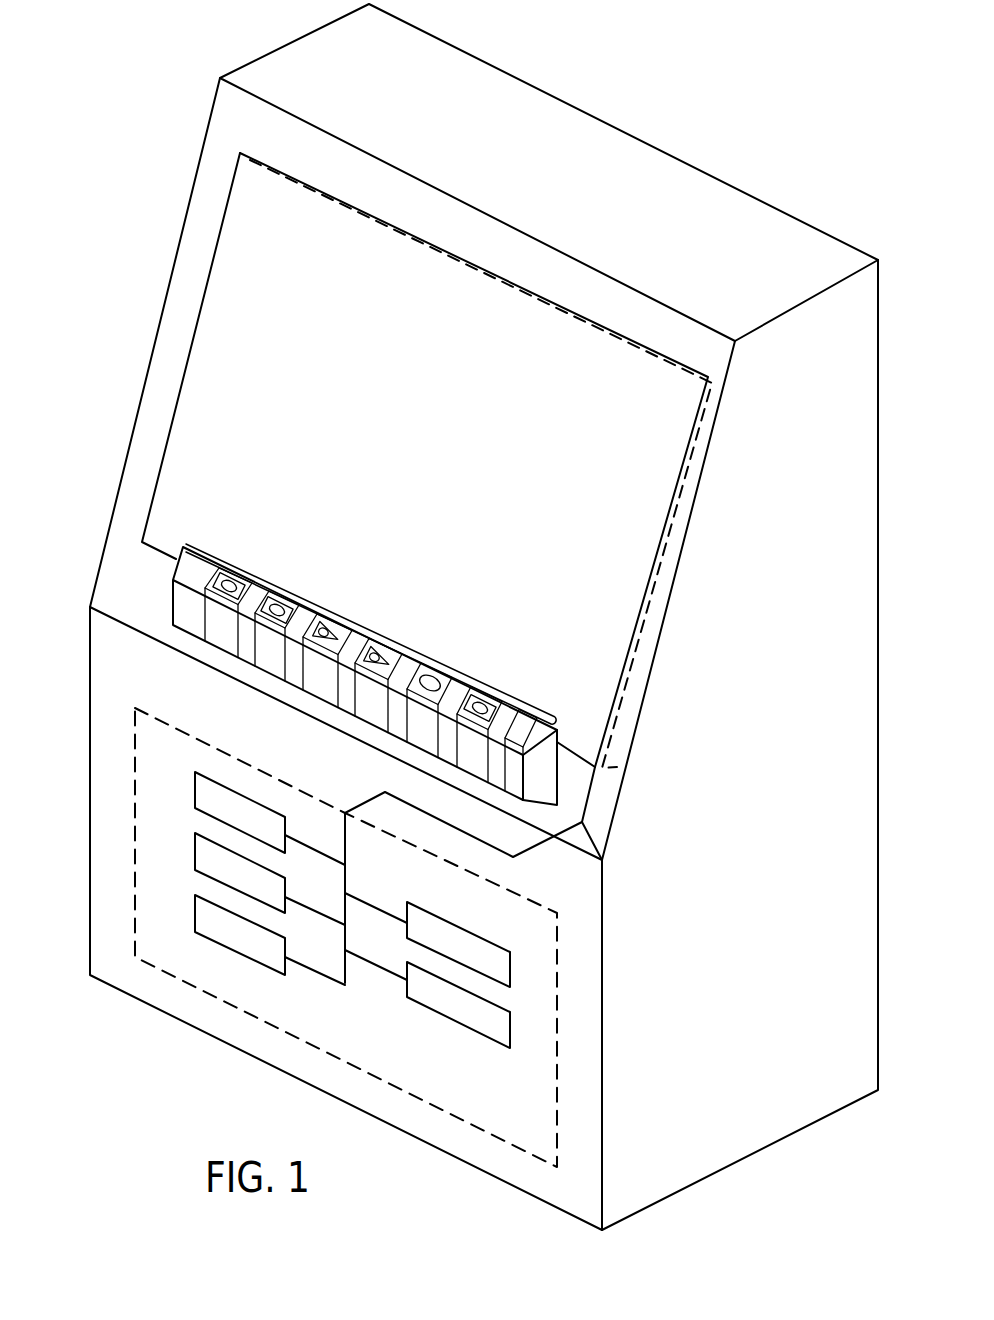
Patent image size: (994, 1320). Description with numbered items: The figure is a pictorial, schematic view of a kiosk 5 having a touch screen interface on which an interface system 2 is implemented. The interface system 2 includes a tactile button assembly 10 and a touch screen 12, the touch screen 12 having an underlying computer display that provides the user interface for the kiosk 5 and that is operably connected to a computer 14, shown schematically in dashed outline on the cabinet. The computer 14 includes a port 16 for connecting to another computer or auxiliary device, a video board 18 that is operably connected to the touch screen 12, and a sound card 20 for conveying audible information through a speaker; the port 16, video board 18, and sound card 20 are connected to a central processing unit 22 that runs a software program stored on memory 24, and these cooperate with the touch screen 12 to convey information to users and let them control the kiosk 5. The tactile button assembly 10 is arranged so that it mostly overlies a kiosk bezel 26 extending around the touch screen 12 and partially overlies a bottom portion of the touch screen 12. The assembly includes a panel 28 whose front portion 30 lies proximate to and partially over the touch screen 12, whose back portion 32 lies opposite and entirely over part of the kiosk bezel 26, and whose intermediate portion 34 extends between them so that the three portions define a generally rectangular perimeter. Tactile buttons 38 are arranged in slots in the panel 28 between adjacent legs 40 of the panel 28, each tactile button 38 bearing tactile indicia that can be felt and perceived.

The interface system 2 is at (122, 573).
The kiosk 5 is at (824, 93).
The tactile button assembly 10 is at (156, 609).
The touch screen 12 is at (621, 560).
The computer 14 is at (557, 1043).
The port 16 is at (240, 912).
The video board 18 is at (240, 850).
The sound card 20 is at (240, 790).
The central processing unit 22 is at (455, 921).
The memory 24 is at (455, 984).
The kiosk bezel 26 is at (202, 220).
The panel 28 is at (179, 549).
The front portion 30 is at (563, 745).
The back portion 32 is at (513, 792).
The intermediate portion 34 is at (559, 778).
The tactile buttons 38 is at (226, 563).
The legs 40 is at (243, 579).